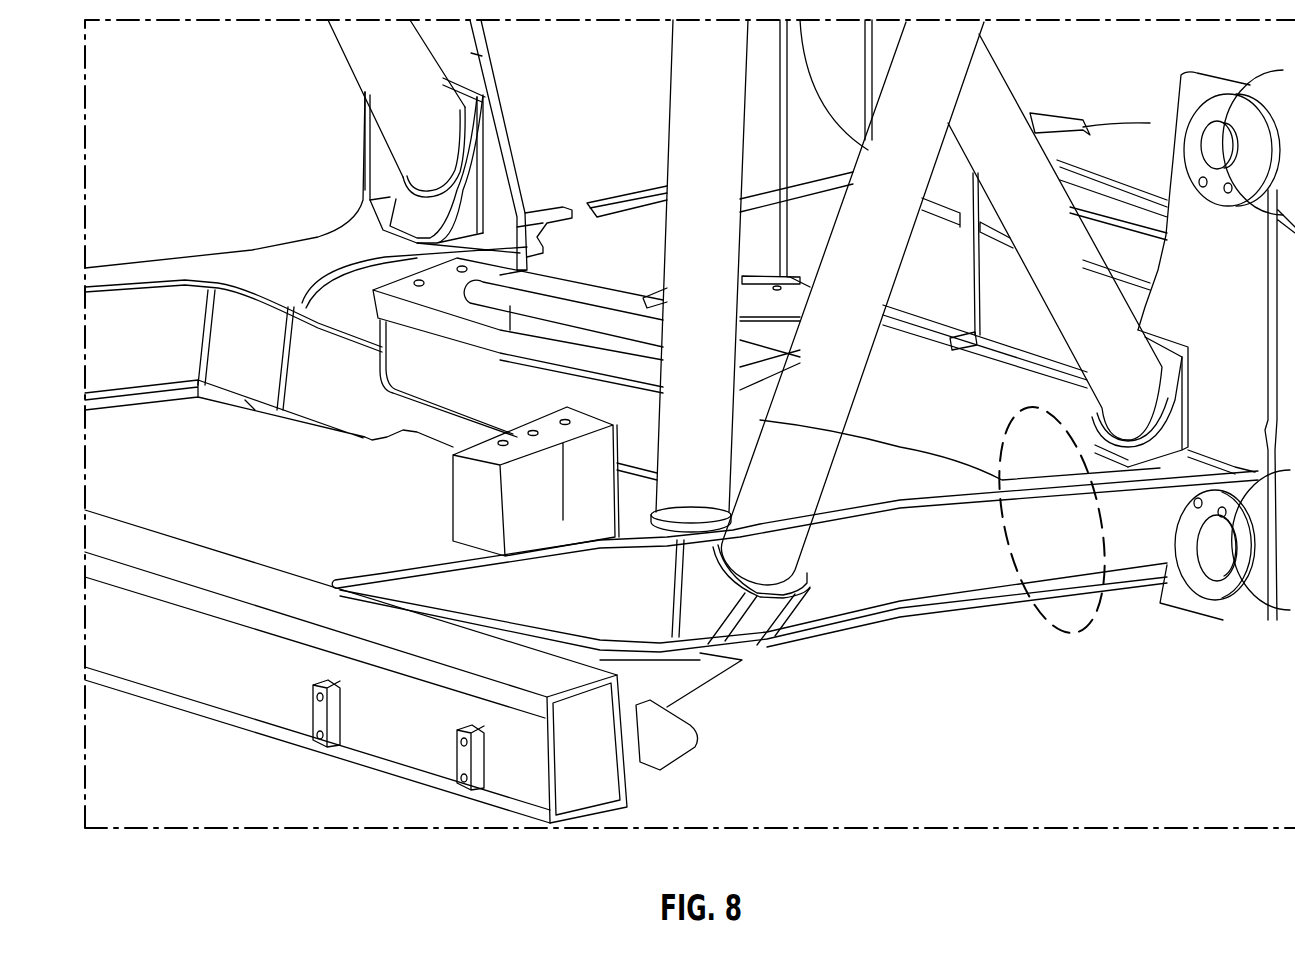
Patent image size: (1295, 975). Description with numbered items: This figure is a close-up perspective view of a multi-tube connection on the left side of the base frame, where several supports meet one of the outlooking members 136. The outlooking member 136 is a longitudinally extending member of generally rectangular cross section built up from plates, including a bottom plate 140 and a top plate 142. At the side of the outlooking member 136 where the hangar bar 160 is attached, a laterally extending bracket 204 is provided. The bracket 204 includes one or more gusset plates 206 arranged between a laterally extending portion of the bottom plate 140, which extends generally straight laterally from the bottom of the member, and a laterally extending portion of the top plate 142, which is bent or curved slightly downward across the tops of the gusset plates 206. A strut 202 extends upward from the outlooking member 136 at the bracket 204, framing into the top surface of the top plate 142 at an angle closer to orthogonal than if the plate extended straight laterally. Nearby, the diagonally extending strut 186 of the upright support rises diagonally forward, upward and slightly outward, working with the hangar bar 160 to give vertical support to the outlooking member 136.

The outlooking member 136 is at (1073, 632).
The bottom plate 140 is at (843, 630).
The top plate 142 is at (962, 462).
The hangar bar 160 is at (677, 277).
The diagonally extending strut 186 is at (1005, 88).
The strut 202 is at (880, 172).
The laterally extending bracket 204 is at (760, 686).
The gusset plate 206 is at (690, 607).